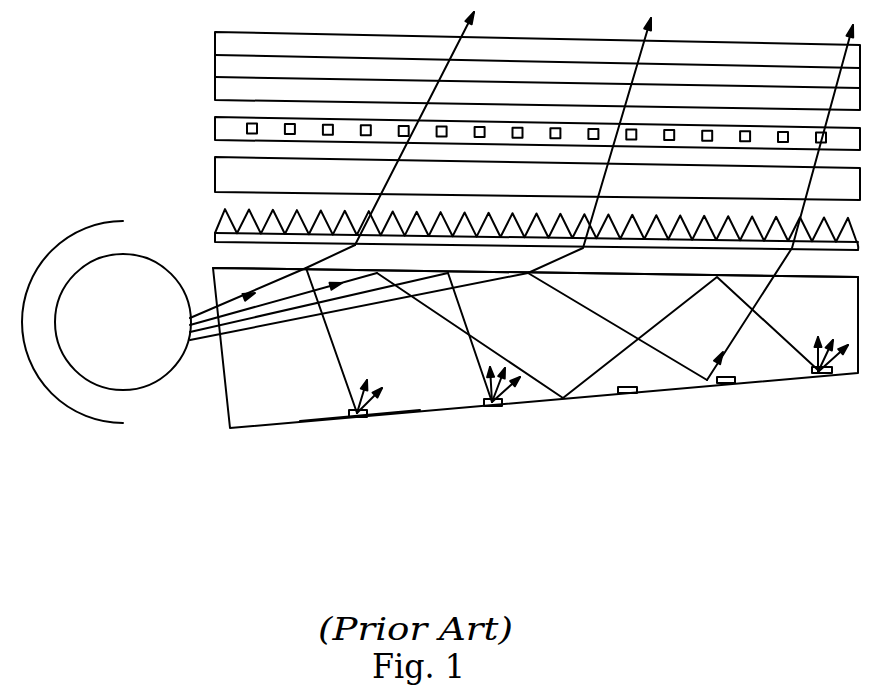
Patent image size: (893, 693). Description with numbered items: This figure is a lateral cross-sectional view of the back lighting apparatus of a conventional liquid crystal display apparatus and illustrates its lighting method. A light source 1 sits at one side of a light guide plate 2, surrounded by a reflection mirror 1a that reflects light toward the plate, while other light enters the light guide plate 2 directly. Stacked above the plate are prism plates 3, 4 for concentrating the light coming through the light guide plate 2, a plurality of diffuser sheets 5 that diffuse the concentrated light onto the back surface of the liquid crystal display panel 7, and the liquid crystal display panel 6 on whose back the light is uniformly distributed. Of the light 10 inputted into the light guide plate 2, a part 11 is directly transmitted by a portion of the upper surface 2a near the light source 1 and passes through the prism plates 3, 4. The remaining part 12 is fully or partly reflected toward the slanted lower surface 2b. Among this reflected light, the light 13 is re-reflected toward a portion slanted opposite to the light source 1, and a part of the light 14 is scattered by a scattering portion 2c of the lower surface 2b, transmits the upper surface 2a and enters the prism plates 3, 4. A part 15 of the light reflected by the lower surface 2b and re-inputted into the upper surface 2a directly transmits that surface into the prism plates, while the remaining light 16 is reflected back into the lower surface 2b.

The light source 1 is at (138, 372).
The reflection mirror 1a is at (55, 248).
The light guide plate 2 is at (216, 412).
The upper surface 2a is at (303, 428).
The slanted lower surface 2b is at (226, 266).
The scattering portion 2c is at (360, 421).
The prism plate 3 is at (215, 235).
The prism plate 4 is at (215, 175).
The diffuser sheets 5 is at (215, 131).
The liquid crystal display panel 6 is at (206, 63).
The liquid crystal display panel 7 is at (692, 372).
The light 10 is at (208, 342).
The part of the light 11 is at (347, 249).
The remaining part of the light 12 is at (588, 310).
The light 13 is at (658, 322).
The light 14 is at (333, 337).
The part of the light 15 is at (770, 297).
The remaining light 16 is at (782, 338).